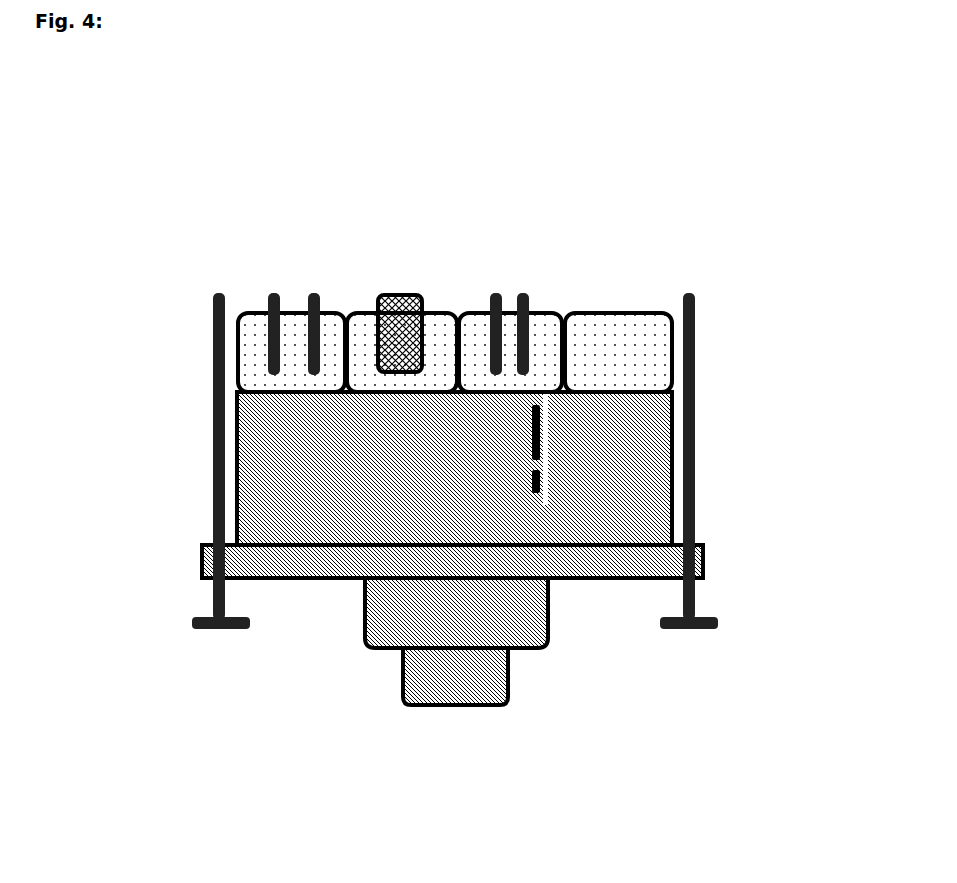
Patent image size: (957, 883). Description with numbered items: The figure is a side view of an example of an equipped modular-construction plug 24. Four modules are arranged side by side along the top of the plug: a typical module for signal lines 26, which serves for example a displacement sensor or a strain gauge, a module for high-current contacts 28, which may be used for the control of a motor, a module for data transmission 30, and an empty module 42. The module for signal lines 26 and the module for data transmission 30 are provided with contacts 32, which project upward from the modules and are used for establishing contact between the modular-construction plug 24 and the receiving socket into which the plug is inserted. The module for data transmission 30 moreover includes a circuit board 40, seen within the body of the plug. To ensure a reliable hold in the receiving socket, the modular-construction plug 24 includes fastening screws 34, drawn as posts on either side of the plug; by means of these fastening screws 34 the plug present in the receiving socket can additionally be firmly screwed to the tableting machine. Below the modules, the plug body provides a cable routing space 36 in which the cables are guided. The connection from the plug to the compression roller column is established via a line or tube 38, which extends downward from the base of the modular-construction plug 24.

The modular-construction plug 24 is at (608, 643).
The module for signal lines 26 is at (255, 348).
The module for high-current contacts 28 is at (367, 333).
The module for data transmission 30 is at (550, 327).
The contacts 32 is at (312, 278).
The fastening screw 34 is at (203, 417).
The cable routing space 36 is at (267, 477).
The line or tube for compression roller column 38 is at (422, 682).
The circuit board 40 is at (563, 441).
The empty module 42 is at (610, 327).